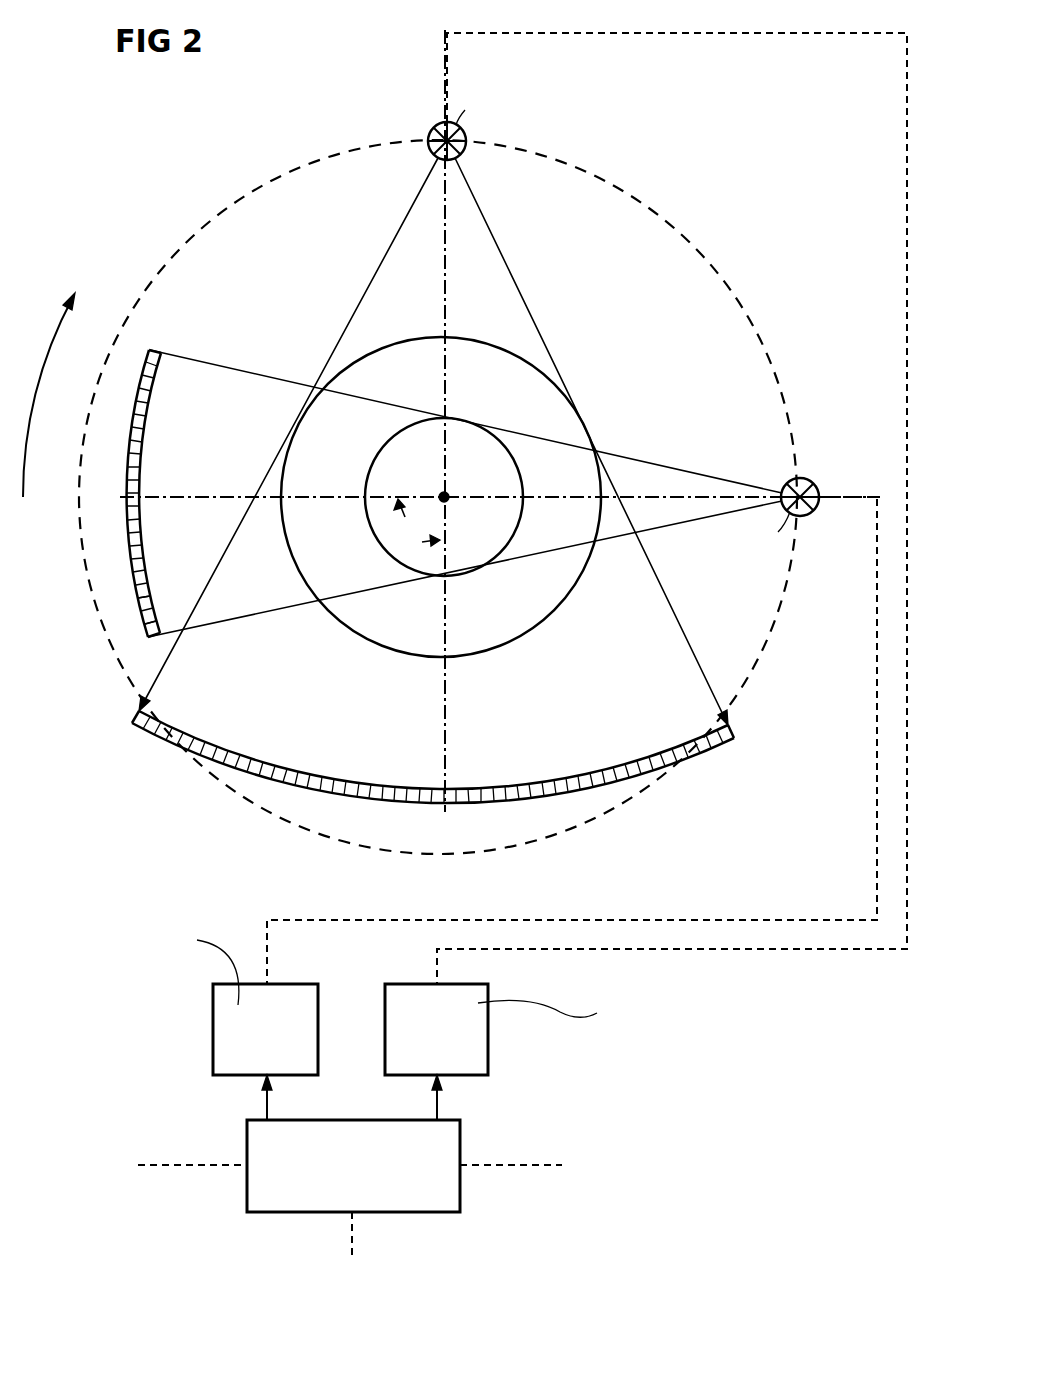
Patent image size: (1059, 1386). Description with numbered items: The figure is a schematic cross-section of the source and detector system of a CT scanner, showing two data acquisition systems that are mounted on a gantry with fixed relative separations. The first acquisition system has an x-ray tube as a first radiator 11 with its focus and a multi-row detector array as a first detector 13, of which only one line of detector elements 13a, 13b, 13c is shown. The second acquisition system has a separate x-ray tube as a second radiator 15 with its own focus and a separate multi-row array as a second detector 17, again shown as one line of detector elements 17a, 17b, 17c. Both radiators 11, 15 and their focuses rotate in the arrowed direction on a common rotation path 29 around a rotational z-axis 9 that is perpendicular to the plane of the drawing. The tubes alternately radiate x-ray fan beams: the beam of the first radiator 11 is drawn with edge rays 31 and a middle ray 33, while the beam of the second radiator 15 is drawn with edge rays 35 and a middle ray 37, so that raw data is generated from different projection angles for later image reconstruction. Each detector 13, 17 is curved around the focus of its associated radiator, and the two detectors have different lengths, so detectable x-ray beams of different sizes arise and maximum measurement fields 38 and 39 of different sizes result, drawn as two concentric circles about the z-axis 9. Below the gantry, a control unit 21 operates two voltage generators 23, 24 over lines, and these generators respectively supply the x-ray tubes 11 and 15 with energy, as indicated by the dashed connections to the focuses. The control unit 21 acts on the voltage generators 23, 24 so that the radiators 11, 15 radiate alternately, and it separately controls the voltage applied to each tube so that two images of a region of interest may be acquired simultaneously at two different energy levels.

The rotational z-axis 9 is at (449, 502).
The first radiator 11 is at (432, 128).
The first detector 13 is at (476, 752).
The detector element 13a is at (733, 738).
The detector element 13b is at (716, 745).
The detector element 13c is at (703, 750).
The second radiator 15 is at (815, 482).
The second detector 17 is at (172, 330).
The detector element 17a is at (148, 640).
The detector element 17b is at (146, 624).
The detector element 17c is at (140, 600).
The control unit 21 is at (460, 1185).
The voltage generator 23 is at (488, 1028).
The voltage generator 24 is at (213, 1030).
The rotation path 29 is at (640, 198).
The edge rays 31 is at (358, 298).
The middle ray 33 is at (449, 368).
The edge rays 35 is at (246, 370).
The middle ray 37 is at (187, 496).
The maximum measurement field 38 is at (577, 586).
The maximum measurement field 39 is at (376, 538).